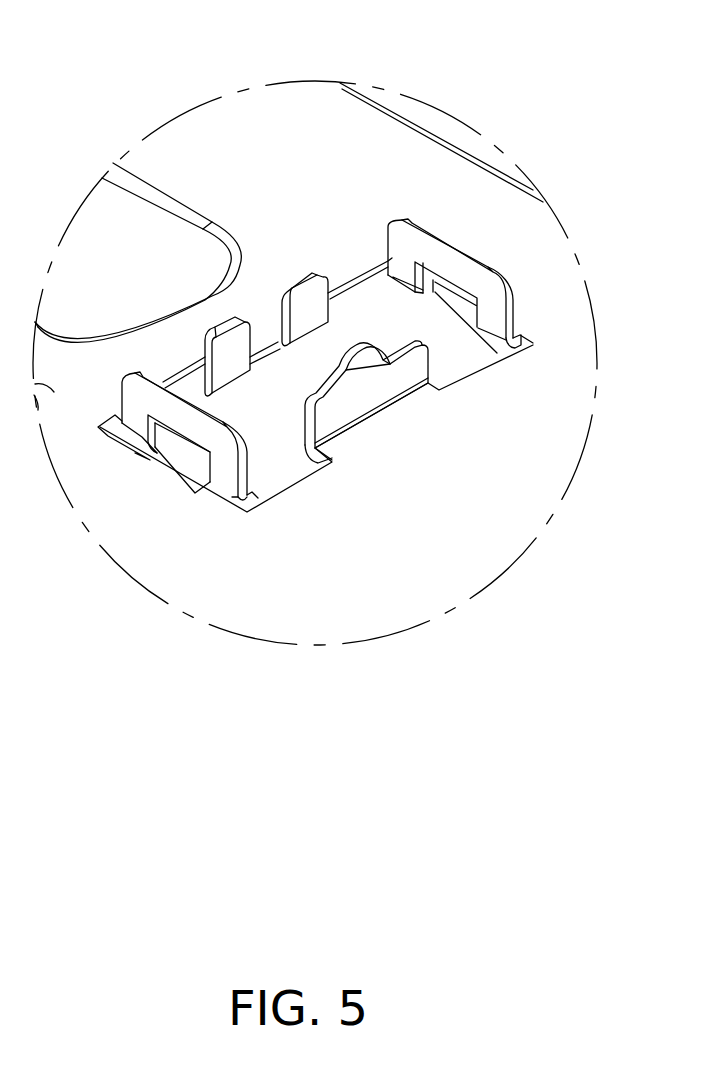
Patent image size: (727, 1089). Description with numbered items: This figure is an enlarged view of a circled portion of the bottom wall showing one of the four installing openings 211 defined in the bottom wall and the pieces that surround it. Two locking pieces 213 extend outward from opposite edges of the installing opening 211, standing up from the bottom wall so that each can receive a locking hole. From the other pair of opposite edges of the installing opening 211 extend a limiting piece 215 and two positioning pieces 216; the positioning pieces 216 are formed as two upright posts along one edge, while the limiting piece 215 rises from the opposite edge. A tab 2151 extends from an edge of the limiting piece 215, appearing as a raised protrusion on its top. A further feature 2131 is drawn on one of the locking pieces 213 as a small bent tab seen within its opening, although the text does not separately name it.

The installing opening 211 is at (260, 427).
The locking piece 213 is at (442, 260).
The elastic tab of bracket 2131 is at (180, 457).
The limiting piece 215 is at (399, 351).
The tab 2151 is at (367, 355).
The positioning piece 216 is at (303, 303).